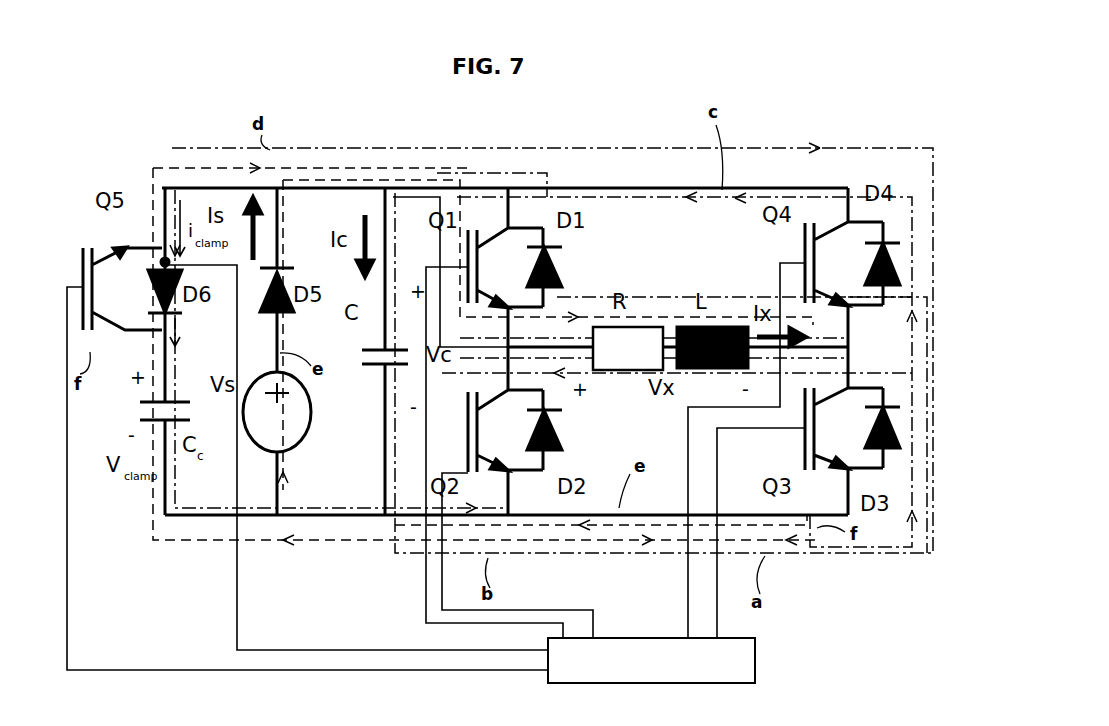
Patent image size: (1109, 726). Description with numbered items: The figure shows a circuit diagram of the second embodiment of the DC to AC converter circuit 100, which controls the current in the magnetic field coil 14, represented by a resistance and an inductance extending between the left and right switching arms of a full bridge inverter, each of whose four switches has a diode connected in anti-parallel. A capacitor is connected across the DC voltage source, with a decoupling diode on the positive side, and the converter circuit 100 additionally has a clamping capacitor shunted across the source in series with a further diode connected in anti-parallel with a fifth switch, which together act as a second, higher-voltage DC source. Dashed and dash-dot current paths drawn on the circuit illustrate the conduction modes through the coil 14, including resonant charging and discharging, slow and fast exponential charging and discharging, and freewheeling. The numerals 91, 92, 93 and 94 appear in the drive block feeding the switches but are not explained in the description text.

The DC to AC converter circuit 100 is at (401, 134).
The coil 14 is at (642, 322).
The gate drive signal for Q1 91 is at (651, 660).
The gate drive signal for Q2 92 is at (651, 660).
The gate drive signal for Q3 93 is at (651, 660).
The gate drive signal for Q4 94 is at (651, 660).